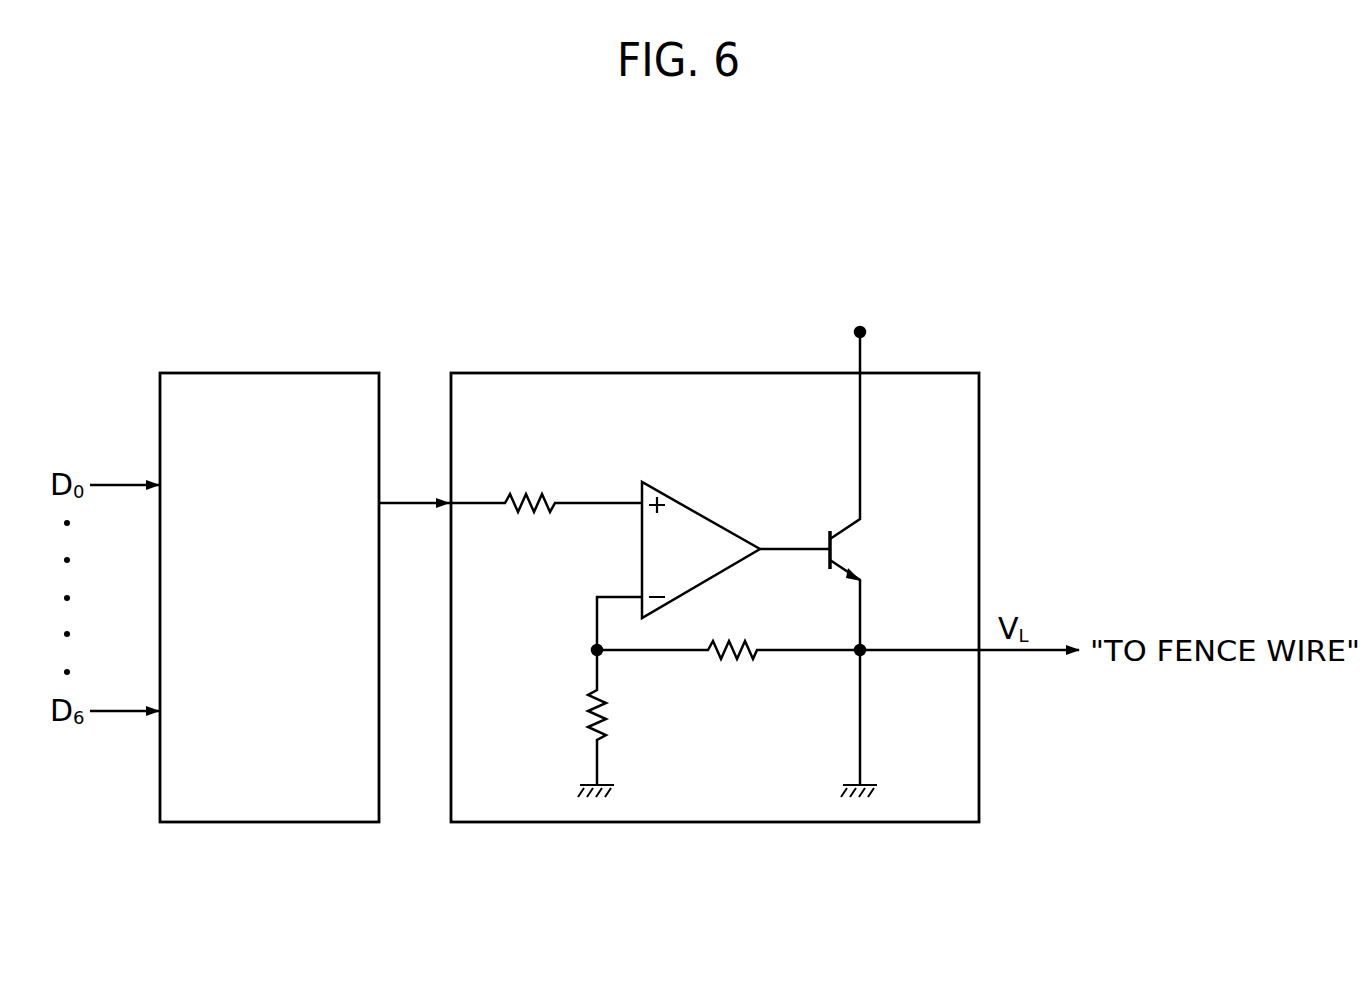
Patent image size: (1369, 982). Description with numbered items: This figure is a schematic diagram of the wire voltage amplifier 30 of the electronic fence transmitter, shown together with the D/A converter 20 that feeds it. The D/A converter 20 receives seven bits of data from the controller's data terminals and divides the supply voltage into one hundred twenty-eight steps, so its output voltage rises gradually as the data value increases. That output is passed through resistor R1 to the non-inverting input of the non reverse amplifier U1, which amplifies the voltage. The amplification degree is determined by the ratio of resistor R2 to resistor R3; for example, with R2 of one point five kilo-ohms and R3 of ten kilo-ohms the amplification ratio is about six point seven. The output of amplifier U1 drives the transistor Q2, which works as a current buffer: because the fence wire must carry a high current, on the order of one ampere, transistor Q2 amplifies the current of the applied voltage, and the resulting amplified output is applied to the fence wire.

The D/A converter 20 is at (342, 372).
The wire voltage amplifier 30 is at (794, 372).
The resistor R1 is at (545, 485).
The resistor R2 is at (616, 717).
The resistor R3 is at (728, 670).
The non reverse amplifier U1 is at (701, 550).
The transistor Q2 is at (869, 491).